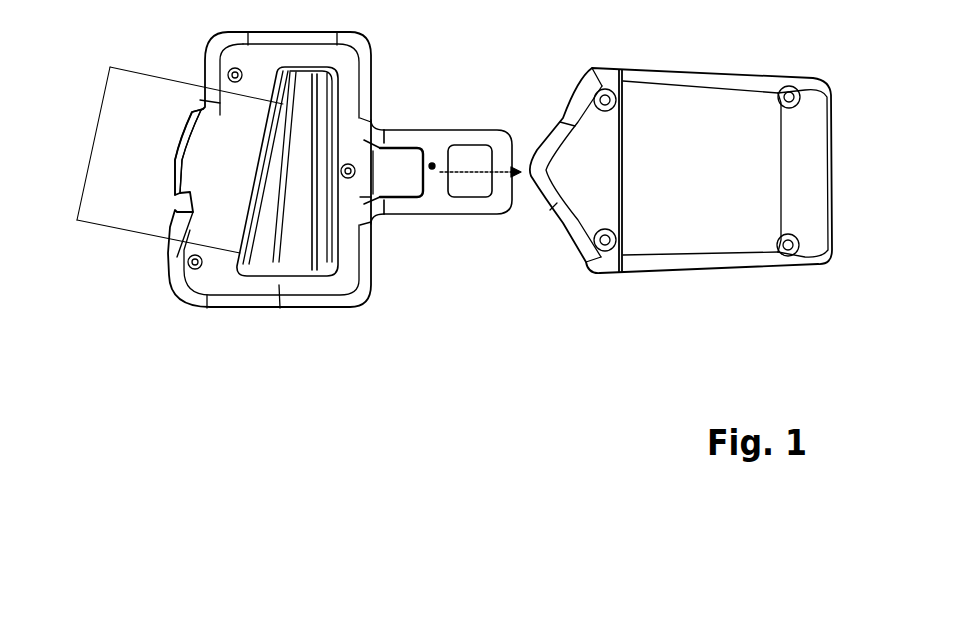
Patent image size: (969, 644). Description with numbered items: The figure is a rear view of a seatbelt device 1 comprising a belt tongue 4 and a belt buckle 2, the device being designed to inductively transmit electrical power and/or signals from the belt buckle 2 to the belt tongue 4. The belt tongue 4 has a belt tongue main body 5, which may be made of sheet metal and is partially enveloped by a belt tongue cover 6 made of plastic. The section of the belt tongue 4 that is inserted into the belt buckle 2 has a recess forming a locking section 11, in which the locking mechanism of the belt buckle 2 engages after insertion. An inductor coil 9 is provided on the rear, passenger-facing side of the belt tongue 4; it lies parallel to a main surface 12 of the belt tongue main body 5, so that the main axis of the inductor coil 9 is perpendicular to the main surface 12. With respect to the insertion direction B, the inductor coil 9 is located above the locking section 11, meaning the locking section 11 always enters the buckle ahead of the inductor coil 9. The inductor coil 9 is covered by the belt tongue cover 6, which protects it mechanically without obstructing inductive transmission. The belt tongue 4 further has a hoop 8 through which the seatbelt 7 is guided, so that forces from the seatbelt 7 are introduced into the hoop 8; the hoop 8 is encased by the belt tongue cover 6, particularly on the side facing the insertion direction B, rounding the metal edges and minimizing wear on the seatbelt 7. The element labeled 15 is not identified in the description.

The seatbelt device 1 is at (455, 397).
The belt buckle 2 is at (675, 246).
The belt tongue 4 is at (396, 270).
The belt tongue main body 5 is at (434, 203).
The belt tongue cover 6 is at (277, 285).
The seatbelt 7 is at (145, 202).
The hoop 8 is at (208, 223).
The inductor coil 9 is at (390, 168).
The locking section 11 is at (463, 162).
The main surface 12 is at (434, 164).
The webbing guide 15 is at (180, 150).
The insertion direction B is at (500, 170).